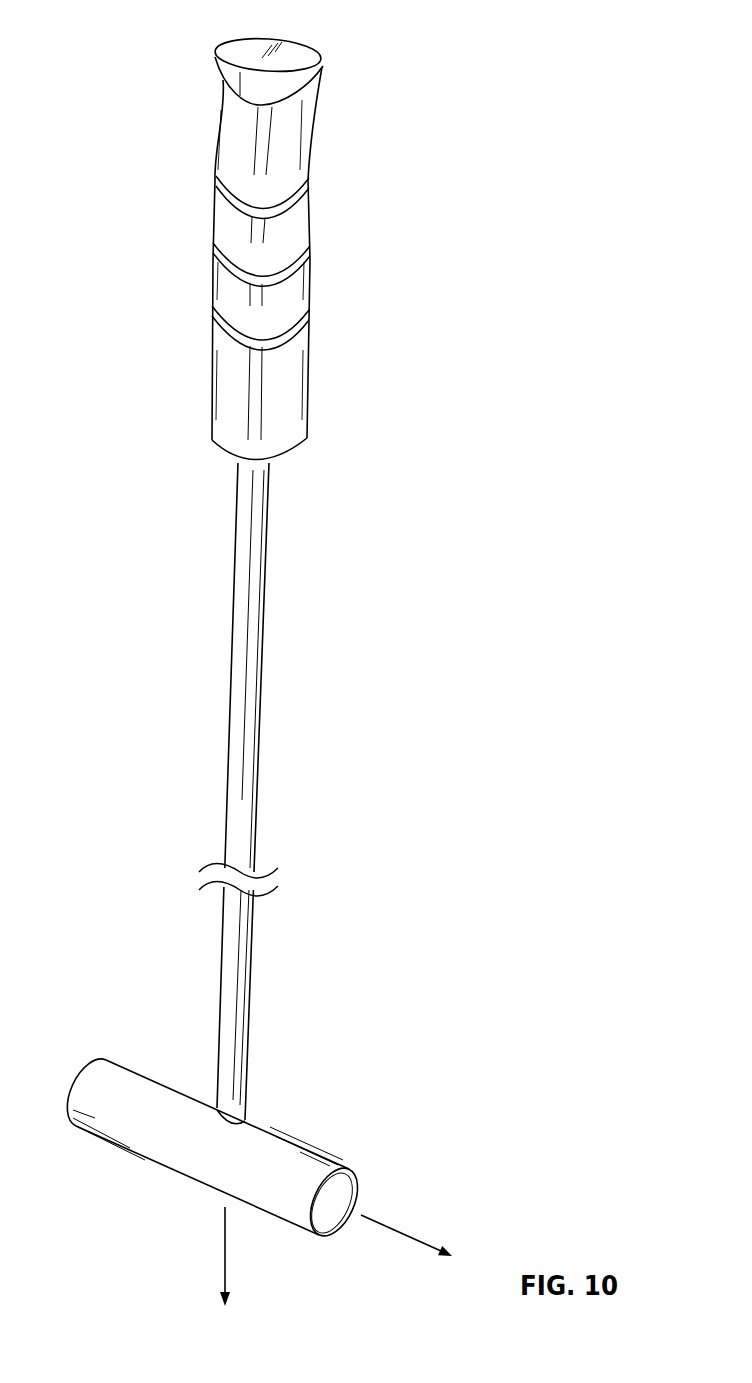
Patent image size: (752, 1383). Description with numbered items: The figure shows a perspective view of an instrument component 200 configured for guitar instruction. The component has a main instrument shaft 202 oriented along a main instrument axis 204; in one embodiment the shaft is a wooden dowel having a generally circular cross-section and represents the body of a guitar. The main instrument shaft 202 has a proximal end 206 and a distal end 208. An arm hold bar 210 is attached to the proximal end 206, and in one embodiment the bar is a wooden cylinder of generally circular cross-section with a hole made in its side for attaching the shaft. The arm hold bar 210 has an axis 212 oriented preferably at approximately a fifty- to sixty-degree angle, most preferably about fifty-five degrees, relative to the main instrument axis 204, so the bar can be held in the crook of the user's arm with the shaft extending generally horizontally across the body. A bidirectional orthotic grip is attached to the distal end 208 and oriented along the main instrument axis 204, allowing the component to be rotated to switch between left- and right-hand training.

The instrument component 200 is at (124, 32).
The main instrument shaft 202 is at (246, 820).
The main instrument axis 204 is at (228, 1247).
The proximal end 206 is at (262, 1095).
The distal end 208 is at (294, 486).
The arm hold bar 210 is at (166, 1158).
The bar axis 212 is at (400, 1227).